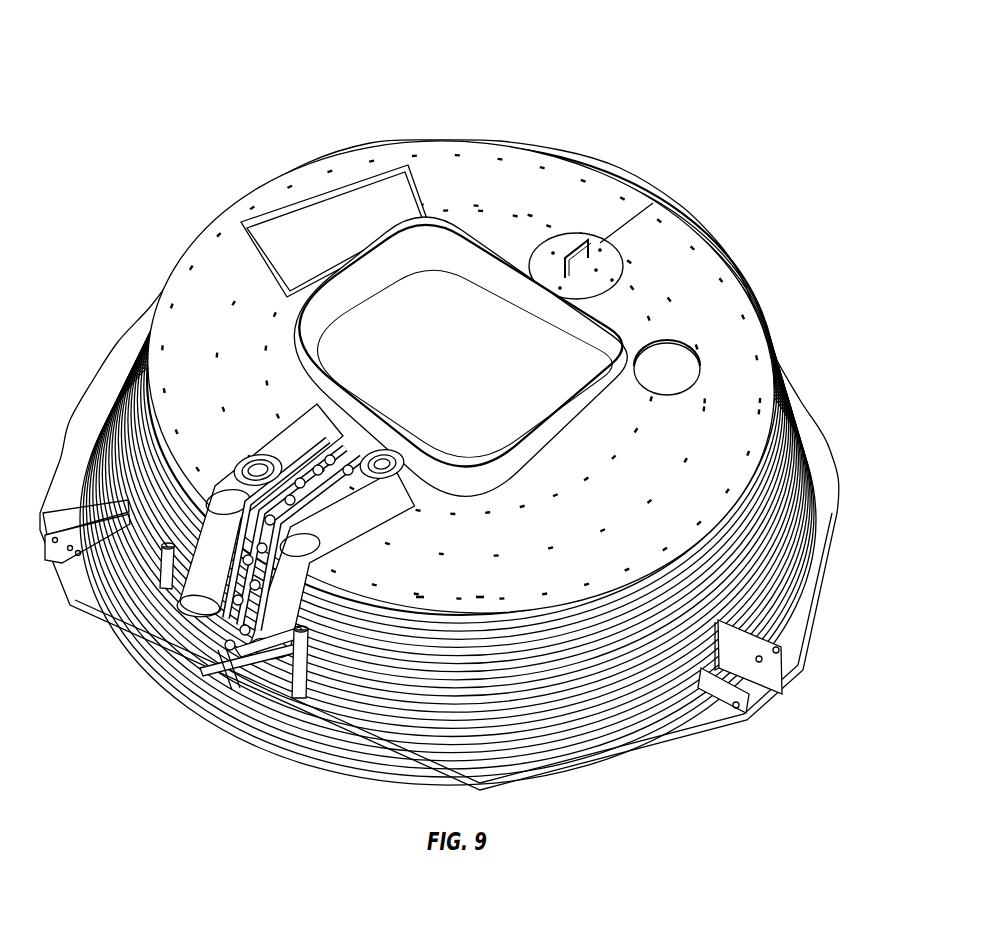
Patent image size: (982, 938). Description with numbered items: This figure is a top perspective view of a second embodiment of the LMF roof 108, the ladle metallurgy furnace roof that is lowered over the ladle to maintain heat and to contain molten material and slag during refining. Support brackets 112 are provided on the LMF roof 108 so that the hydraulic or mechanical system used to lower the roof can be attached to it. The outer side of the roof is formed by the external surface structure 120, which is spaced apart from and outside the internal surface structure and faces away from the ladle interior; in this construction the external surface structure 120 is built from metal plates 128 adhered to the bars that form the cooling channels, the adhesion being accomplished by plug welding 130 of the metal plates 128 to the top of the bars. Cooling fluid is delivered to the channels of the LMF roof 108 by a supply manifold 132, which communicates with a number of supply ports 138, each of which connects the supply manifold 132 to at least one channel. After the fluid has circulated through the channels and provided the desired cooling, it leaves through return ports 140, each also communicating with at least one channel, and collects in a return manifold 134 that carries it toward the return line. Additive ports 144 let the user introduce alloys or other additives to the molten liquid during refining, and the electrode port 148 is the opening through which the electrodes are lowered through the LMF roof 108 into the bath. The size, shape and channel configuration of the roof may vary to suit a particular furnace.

The LMF roof 108 is at (560, 92).
The support brackets 112 is at (757, 680).
The external surface structure 120 is at (780, 525).
The metal plates 128 is at (540, 570).
The plug welding 130 is at (480, 597).
The supply manifold 132 is at (198, 583).
The return manifold 134 is at (265, 650).
The supply ports 138 is at (225, 648).
The return ports 140 is at (340, 570).
The additive ports 144 is at (660, 352).
The electrode port 148 is at (455, 305).